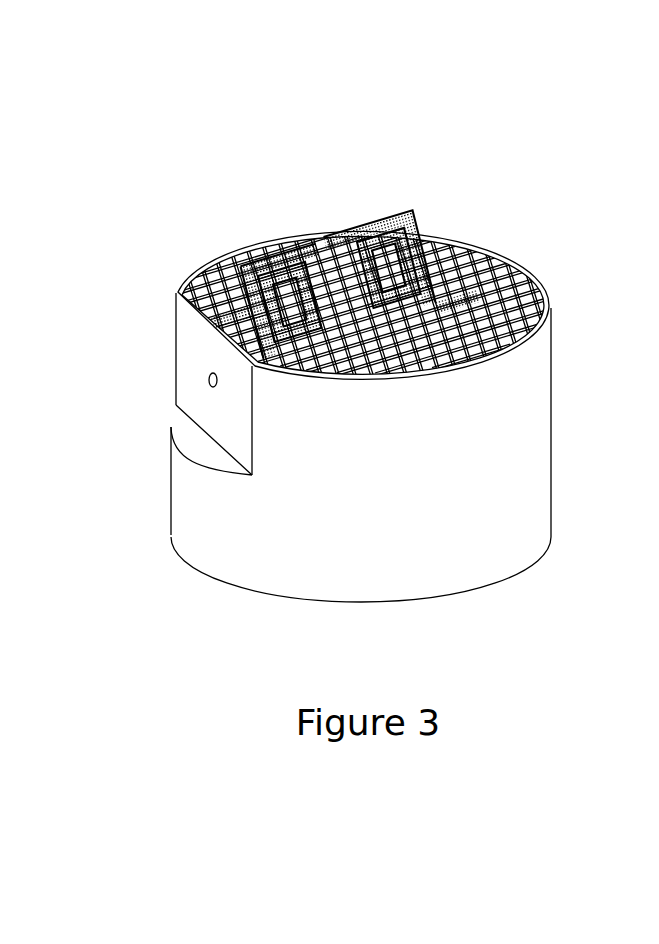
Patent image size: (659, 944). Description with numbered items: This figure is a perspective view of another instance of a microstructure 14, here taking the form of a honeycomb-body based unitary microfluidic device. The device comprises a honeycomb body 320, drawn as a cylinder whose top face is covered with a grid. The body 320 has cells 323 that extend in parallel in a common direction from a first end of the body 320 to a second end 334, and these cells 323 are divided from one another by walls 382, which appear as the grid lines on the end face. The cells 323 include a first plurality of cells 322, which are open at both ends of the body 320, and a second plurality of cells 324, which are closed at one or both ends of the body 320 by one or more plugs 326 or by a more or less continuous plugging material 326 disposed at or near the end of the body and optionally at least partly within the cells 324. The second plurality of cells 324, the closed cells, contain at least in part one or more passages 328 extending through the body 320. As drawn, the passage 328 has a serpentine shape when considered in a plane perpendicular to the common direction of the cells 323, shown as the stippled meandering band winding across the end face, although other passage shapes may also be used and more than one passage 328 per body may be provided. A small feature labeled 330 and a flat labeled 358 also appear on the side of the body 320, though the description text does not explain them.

The microstructure 14 is at (528, 603).
The honeycomb body 320 is at (518, 490).
The first plurality of cells 322 is at (452, 240).
The cells 323 is at (455, 186).
The second plurality of cells 324 is at (348, 256).
The plug 326 is at (512, 288).
The passage 328 is at (522, 295).
The hole 330 is at (208, 380).
The second end 334 is at (325, 616).
The flat face 358 is at (185, 323).
The walls 382 is at (416, 370).